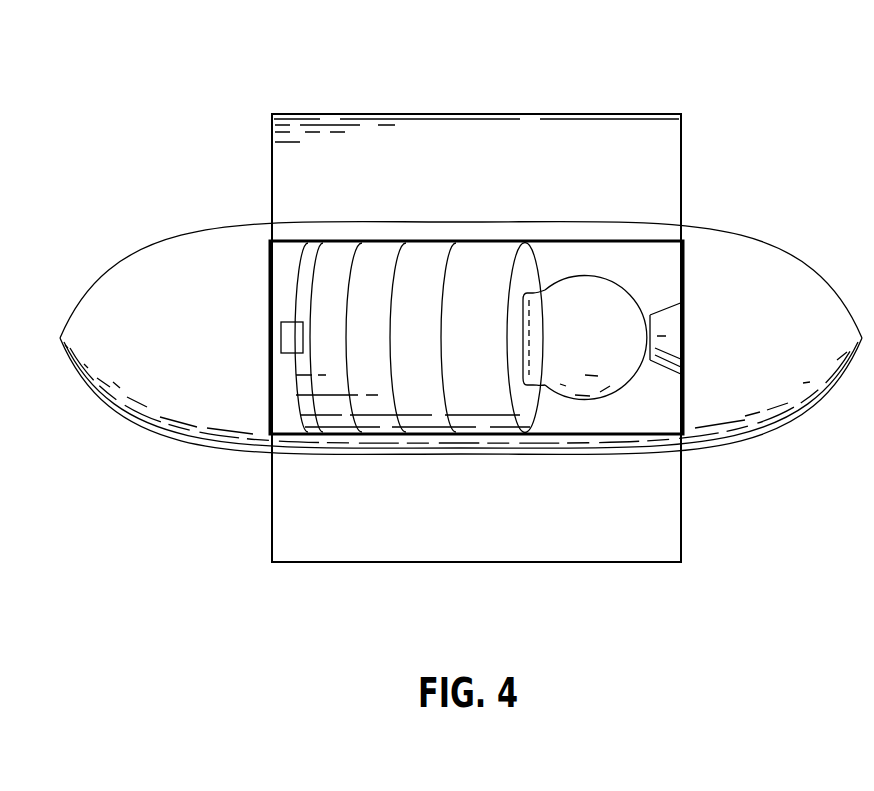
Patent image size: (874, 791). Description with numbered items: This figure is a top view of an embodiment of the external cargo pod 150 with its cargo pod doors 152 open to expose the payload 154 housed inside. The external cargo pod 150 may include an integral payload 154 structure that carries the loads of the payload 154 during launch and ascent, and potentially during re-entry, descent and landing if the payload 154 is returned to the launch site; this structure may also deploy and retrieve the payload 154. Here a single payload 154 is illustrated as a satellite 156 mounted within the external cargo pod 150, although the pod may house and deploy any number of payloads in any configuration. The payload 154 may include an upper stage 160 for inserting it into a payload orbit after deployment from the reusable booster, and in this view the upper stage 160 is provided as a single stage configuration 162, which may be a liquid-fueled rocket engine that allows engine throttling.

The external cargo pod 150 is at (102, 268).
The cargo pod doors 152 is at (296, 112).
The payload 154 is at (384, 245).
The satellite 156 is at (461, 243).
The upper stage 160 is at (603, 218).
The single stage configuration 162 is at (666, 338).